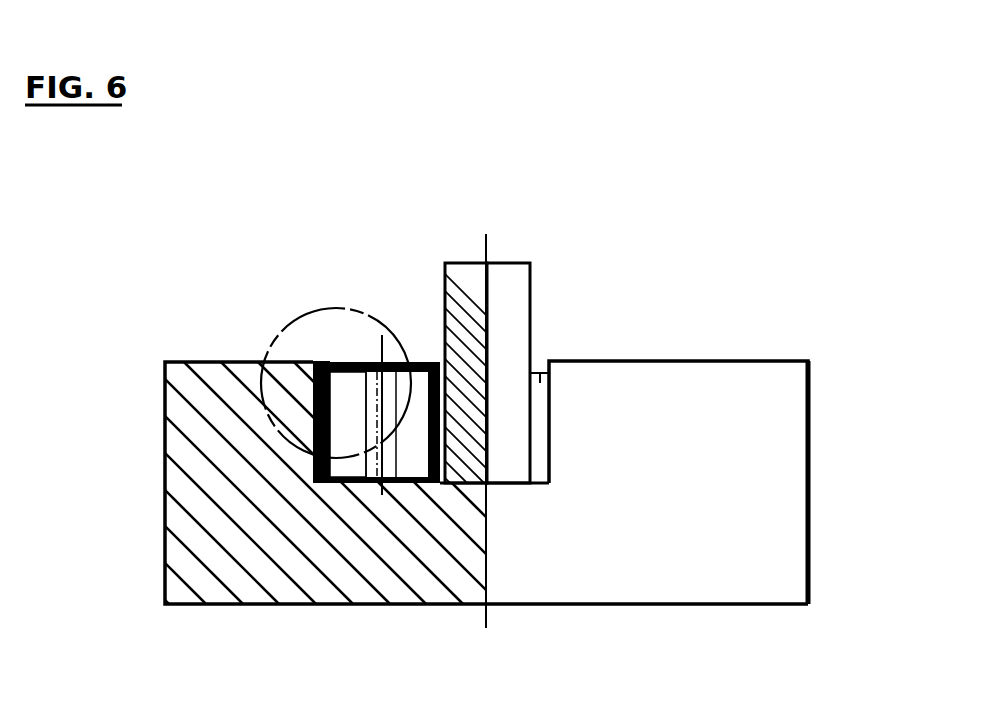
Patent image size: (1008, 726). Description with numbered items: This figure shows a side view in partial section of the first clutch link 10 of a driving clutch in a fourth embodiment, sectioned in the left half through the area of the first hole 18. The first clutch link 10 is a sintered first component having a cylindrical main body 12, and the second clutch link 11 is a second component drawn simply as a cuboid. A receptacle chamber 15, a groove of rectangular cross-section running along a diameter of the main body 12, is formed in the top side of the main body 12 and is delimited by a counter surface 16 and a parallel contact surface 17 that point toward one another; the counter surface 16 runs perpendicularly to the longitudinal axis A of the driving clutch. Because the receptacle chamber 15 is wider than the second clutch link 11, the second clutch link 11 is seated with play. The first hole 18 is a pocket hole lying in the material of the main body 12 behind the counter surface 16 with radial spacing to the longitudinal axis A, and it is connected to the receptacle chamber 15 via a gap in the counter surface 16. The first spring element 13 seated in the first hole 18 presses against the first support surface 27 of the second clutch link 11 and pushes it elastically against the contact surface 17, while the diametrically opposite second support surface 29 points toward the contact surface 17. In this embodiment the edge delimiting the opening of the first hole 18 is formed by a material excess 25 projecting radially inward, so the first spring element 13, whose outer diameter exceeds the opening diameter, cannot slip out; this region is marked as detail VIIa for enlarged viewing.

The first clutch link 10 is at (170, 316).
The second clutch link 11 is at (511, 240).
The main body 12 is at (165, 410).
The first spring element 13 is at (342, 452).
The receptacle chamber 15 is at (540, 367).
The counter surface 16 is at (420, 361).
The contact surface 17 is at (548, 412).
The first hole 18 is at (357, 487).
The material excess 25 is at (318, 361).
The first support surface 27 is at (444, 302).
The second support surface 29 is at (535, 307).
The longitudinal axis A is at (488, 238).
The detail VIIa is at (272, 346).